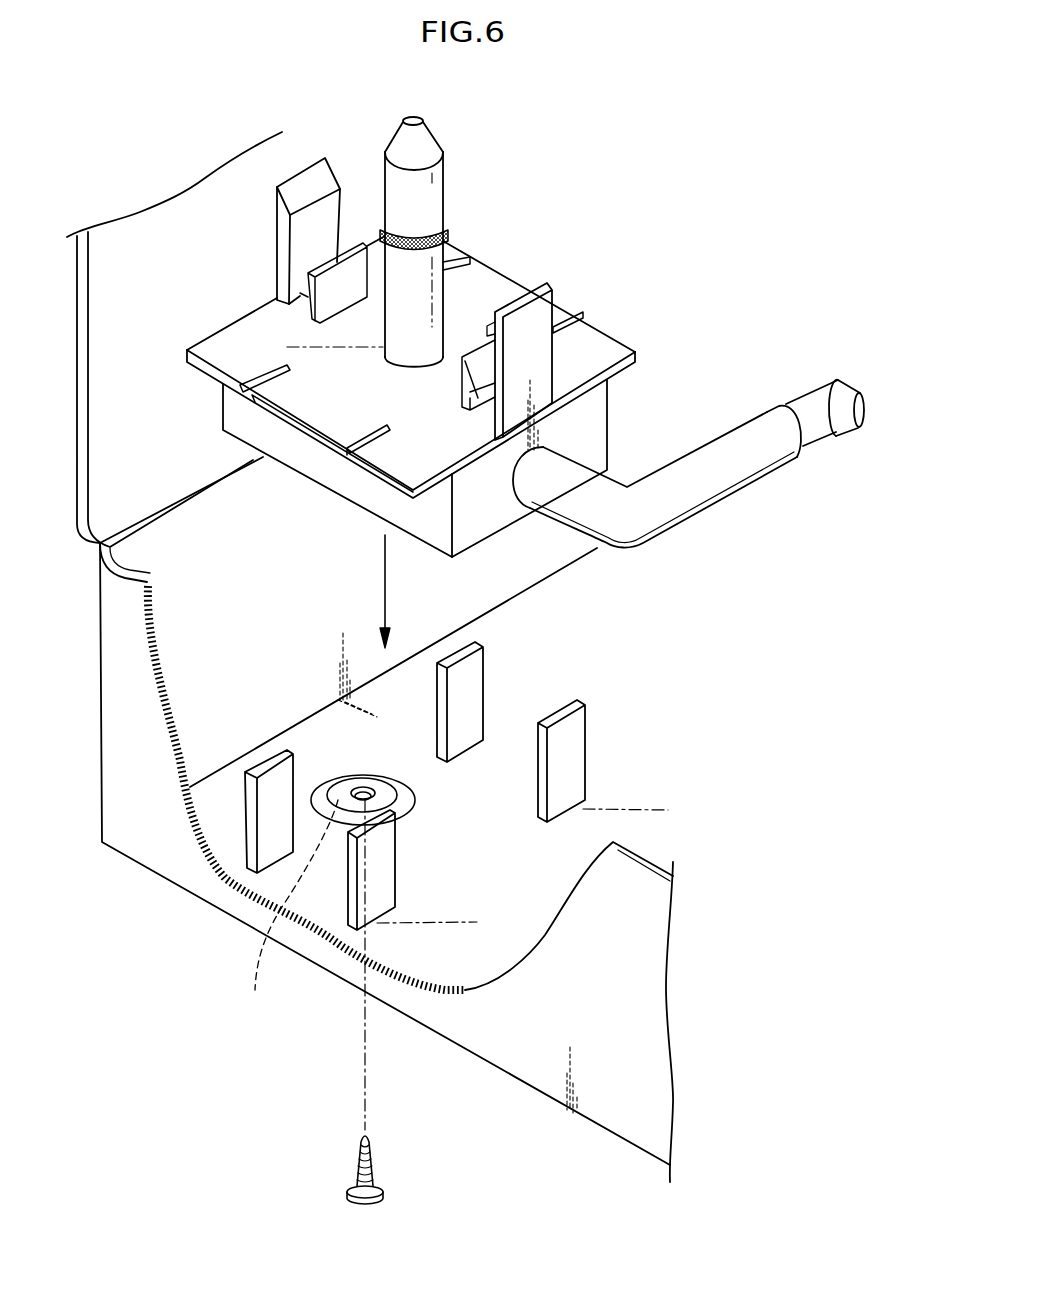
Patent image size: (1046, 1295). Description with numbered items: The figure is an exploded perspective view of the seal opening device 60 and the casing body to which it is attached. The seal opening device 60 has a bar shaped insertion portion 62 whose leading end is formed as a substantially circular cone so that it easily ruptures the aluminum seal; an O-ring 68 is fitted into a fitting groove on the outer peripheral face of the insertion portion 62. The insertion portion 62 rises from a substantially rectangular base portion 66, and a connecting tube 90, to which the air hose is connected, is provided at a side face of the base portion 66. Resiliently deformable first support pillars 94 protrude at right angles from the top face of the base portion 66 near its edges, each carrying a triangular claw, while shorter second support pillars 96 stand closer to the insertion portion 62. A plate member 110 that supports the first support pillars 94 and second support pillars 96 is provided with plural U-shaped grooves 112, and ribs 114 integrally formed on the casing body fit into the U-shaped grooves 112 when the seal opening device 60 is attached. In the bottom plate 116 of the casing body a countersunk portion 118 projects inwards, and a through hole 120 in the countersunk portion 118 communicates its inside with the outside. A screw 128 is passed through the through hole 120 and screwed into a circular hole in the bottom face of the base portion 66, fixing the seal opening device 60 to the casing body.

The seal opening device 60 is at (218, 285).
The insertion portion 62 is at (443, 183).
The base portion 66 is at (430, 510).
The O-ring 68 is at (443, 232).
The connecting tube 90 is at (743, 467).
The first support pillar 94 is at (293, 236).
The second support pillar 96 is at (477, 400).
The plate member 110 is at (213, 347).
The U-shaped groove 112 is at (470, 257).
The rib 114 is at (273, 787).
The bottom plate 116 is at (533, 1030).
The countersunk portion 118 is at (288, 912).
The through hole 120 is at (363, 790).
The screw 128 is at (360, 1167).